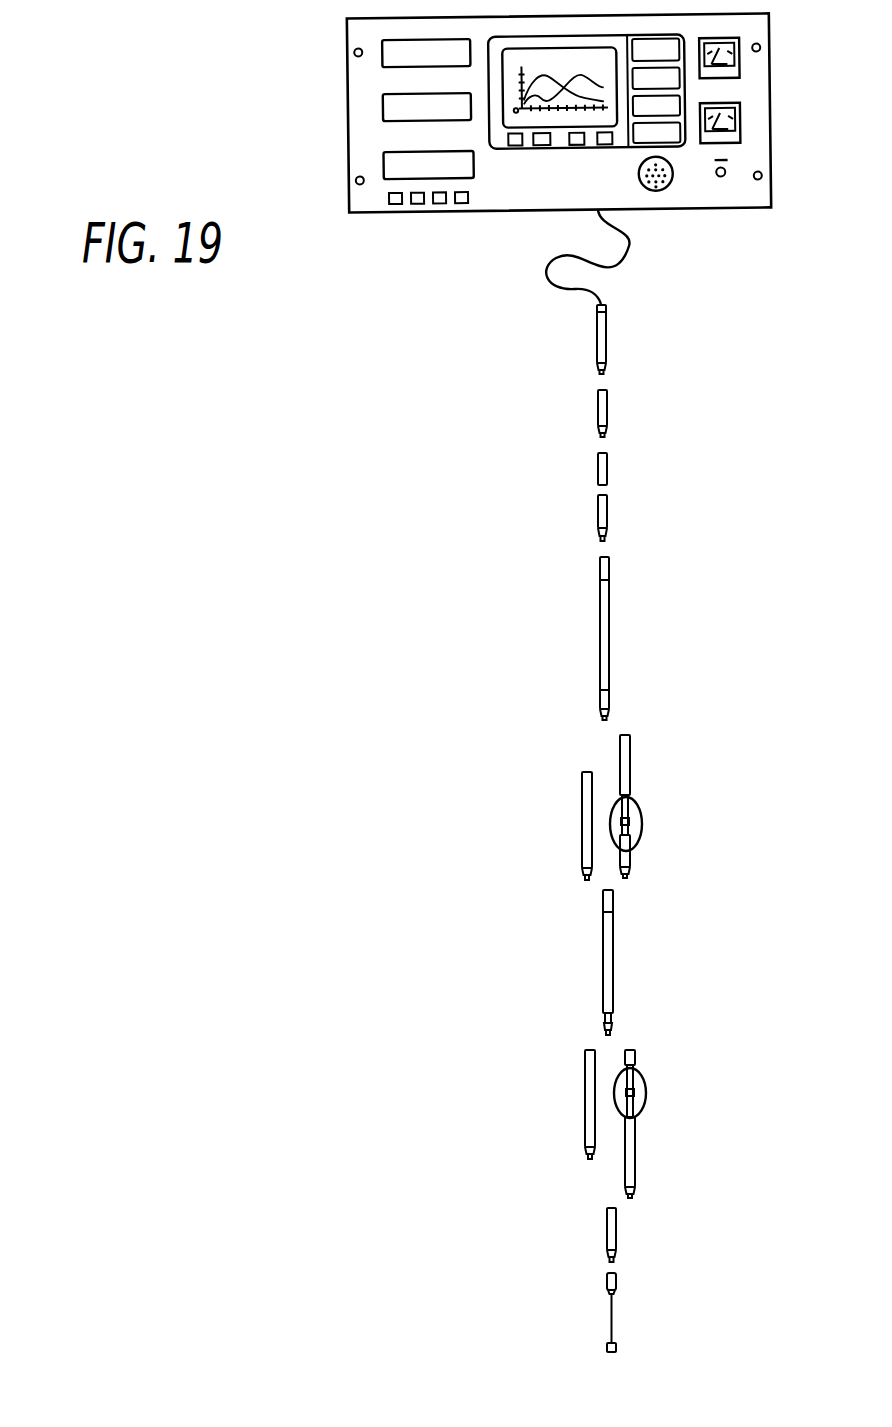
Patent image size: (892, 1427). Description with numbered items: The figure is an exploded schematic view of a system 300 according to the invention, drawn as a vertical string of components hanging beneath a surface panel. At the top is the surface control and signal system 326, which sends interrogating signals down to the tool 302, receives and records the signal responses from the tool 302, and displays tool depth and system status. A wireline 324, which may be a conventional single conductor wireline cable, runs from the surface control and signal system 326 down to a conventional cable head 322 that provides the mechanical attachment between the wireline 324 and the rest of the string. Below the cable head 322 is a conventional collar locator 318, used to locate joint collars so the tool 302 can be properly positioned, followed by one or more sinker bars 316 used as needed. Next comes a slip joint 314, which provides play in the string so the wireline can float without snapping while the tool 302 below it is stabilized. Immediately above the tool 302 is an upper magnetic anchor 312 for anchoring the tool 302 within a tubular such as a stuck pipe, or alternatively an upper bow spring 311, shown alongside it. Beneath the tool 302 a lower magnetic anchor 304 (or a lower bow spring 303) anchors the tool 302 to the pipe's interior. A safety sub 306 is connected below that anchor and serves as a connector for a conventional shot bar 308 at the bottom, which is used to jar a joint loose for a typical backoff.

The system 300 is at (428, 318).
The tool 302 is at (605, 950).
The lower bow spring 303 is at (625, 1170).
The lower magnetic anchor 304 is at (590, 1082).
The safety sub 306 is at (607, 1234).
The shot bar 308 is at (611, 1322).
The upper bow spring 311 is at (622, 763).
The upper magnetic anchor 312 is at (585, 822).
The slip joint 314 is at (602, 643).
The sinker bars 316 is at (598, 518).
The collar locator 318 is at (598, 410).
The cable head 322 is at (598, 340).
The wireline 324 is at (618, 268).
The surface control and signal system 326 is at (366, 138).